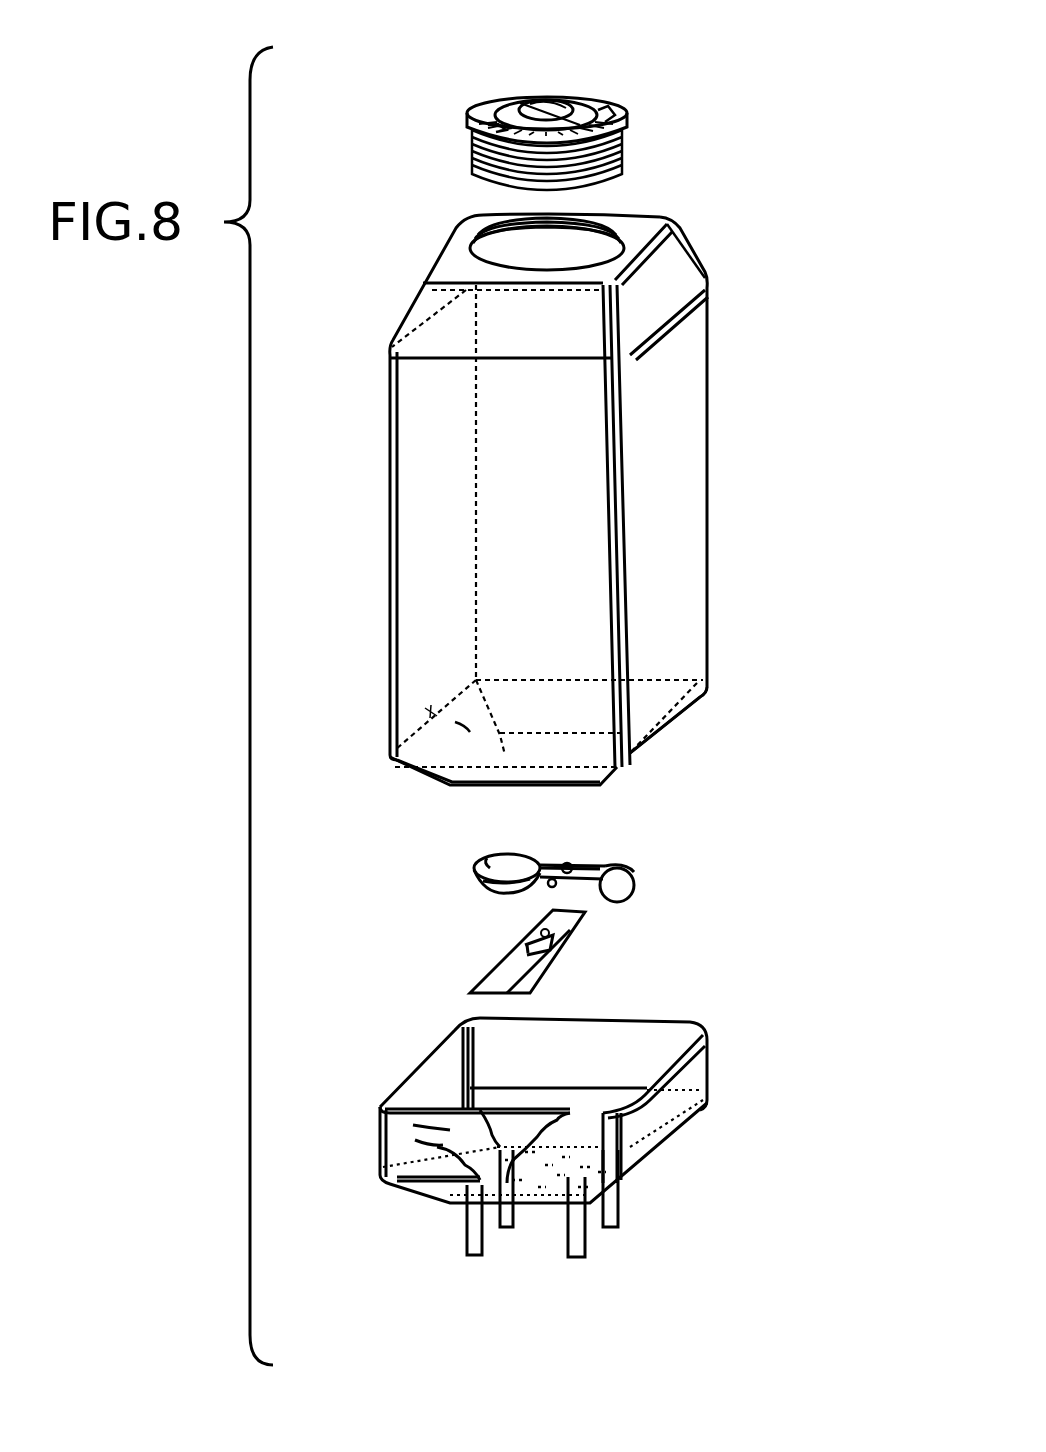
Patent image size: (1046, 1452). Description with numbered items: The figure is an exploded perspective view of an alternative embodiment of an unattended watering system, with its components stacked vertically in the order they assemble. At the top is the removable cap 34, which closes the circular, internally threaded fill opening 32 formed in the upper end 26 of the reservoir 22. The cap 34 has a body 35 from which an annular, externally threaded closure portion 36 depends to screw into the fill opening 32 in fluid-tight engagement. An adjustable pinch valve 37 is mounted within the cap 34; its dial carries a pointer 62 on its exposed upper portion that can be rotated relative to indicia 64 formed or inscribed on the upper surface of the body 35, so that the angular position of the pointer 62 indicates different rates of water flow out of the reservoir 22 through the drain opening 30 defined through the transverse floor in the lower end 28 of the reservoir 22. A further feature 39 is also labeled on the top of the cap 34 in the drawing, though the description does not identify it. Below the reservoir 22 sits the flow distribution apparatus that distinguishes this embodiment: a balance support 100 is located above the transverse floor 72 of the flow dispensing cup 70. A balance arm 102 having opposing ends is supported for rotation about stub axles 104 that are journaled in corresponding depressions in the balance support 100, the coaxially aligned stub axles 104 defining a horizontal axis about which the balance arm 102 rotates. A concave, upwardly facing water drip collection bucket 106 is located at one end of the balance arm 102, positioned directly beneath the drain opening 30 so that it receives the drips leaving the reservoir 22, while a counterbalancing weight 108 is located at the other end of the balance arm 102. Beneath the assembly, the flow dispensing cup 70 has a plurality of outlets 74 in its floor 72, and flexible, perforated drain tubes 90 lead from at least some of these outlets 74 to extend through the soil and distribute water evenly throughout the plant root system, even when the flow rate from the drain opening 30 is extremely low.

The reservoir 22 is at (725, 497).
The upper end 26 is at (683, 262).
The lower end 28 is at (707, 670).
The drain opening 30 is at (301, 708).
The fill opening 32 is at (580, 245).
The cap 34 is at (658, 132).
The body 35 is at (632, 140).
The closure portion 36 is at (477, 167).
The pinch valve 37 is at (575, 80).
The indicia 39 is at (520, 103).
The pointer 62 is at (533, 100).
The indicia 64 is at (603, 117).
The flow dispensing cup 70 is at (725, 1072).
The transverse floor 72 is at (540, 1188).
The outlets 74 is at (350, 1134).
The drain tubes 90 is at (467, 1222).
The balance support 100 is at (543, 963).
The balance arm 102 is at (585, 867).
The stub axles 104 is at (483, 917).
The water drip collection bucket 106 is at (480, 860).
The counterbalancing weight 108 is at (640, 870).